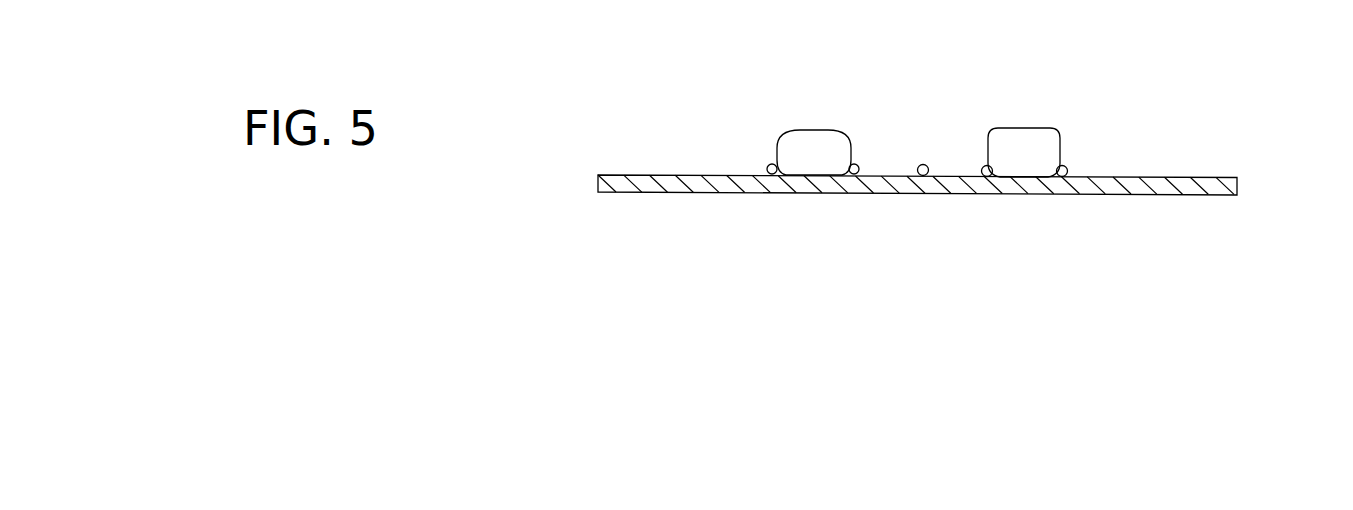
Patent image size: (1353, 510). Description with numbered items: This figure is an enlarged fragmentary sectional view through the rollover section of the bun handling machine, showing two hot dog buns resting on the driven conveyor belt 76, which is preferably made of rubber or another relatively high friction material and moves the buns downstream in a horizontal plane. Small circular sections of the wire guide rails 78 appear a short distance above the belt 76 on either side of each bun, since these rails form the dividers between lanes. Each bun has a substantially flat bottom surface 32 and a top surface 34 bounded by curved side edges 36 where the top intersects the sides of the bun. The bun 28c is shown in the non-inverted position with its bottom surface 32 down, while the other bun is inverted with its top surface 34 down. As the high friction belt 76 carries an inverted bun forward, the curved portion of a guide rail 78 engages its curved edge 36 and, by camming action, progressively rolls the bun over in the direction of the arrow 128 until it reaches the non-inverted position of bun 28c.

The bun 28c is at (961, 141).
The bottom surface 32 is at (917, 156).
The top surface 34 is at (917, 154).
The curved side edges 36 is at (780, 131).
The conveyor belt 76 is at (631, 180).
The guide rails 78 is at (767, 167).
The directional arrow 128 is at (1053, 78).